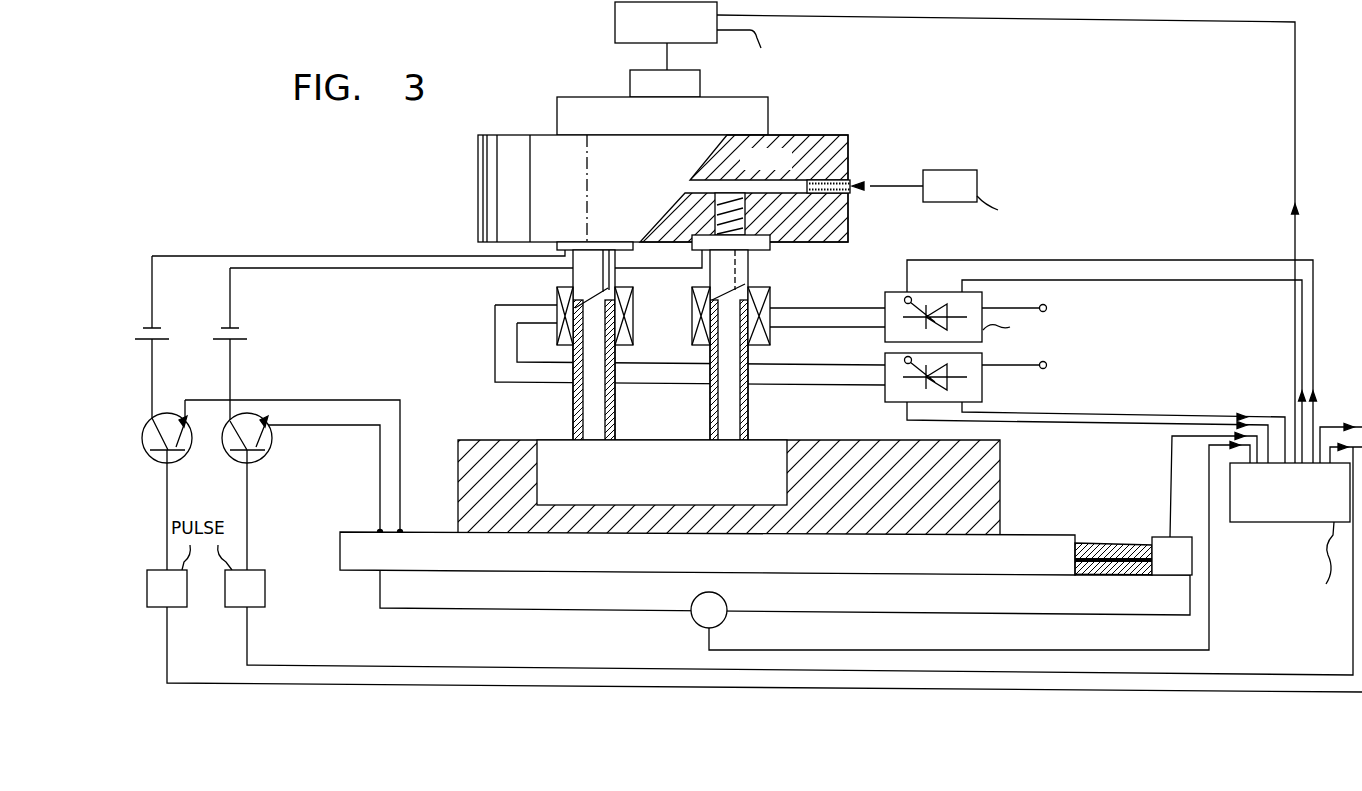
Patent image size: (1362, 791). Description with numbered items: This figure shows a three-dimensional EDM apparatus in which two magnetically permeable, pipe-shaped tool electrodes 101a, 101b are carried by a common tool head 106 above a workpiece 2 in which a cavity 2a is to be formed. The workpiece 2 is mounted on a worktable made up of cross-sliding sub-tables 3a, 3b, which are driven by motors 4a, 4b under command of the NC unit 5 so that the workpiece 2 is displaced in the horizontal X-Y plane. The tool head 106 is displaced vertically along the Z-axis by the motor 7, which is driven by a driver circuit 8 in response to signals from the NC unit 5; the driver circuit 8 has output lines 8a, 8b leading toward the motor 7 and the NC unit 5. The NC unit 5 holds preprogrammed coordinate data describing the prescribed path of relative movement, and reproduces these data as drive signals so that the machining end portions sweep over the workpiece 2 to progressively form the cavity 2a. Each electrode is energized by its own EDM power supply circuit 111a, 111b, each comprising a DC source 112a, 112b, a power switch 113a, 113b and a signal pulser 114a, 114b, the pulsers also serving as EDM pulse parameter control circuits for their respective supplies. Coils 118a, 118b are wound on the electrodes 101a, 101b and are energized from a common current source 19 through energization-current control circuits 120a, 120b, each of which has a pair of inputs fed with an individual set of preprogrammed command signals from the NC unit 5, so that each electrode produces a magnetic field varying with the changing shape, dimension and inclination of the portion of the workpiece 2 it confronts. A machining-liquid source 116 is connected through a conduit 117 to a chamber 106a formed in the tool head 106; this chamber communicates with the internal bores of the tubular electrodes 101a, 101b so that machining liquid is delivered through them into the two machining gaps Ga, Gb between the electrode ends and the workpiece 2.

The workpiece 2 is at (756, 477).
The cavity 2a is at (796, 455).
The cross-sliding sub-table 3a is at (343, 570).
The cross-sliding sub-table 3b is at (457, 610).
The motor 4a is at (1157, 577).
The motor 4b is at (692, 616).
The NC unit 5 is at (1291, 522).
The motor 7 is at (700, 78).
The driver circuit 8 is at (615, 18).
The driver circuit output line 8a is at (846, 20).
The driver circuit output line 8b is at (755, 48).
The common current source 19 is at (983, 358).
The tool electrode 101a is at (615, 408).
The tool electrode 101b is at (750, 408).
The tool head 106 is at (676, 173).
The chamber 106a is at (783, 178).
The EDM power supply circuit 111a is at (190, 367).
The EDM power supply circuit 111b is at (273, 367).
The DC source 112a is at (166, 330).
The DC source 112b is at (244, 330).
The power switch 113a is at (187, 457).
The power switch 113b is at (268, 457).
The signal pulser 114a is at (187, 600).
The signal pulser 114b is at (265, 600).
The machining-liquid source 116 is at (977, 176).
The conduit 117 is at (884, 192).
The coil 118a is at (557, 289).
The coil 118b is at (770, 290).
The control circuit 120a is at (983, 385).
The control circuit 120b is at (893, 292).
The machining gap Ga is at (596, 506).
The machining gap Gb is at (728, 506).